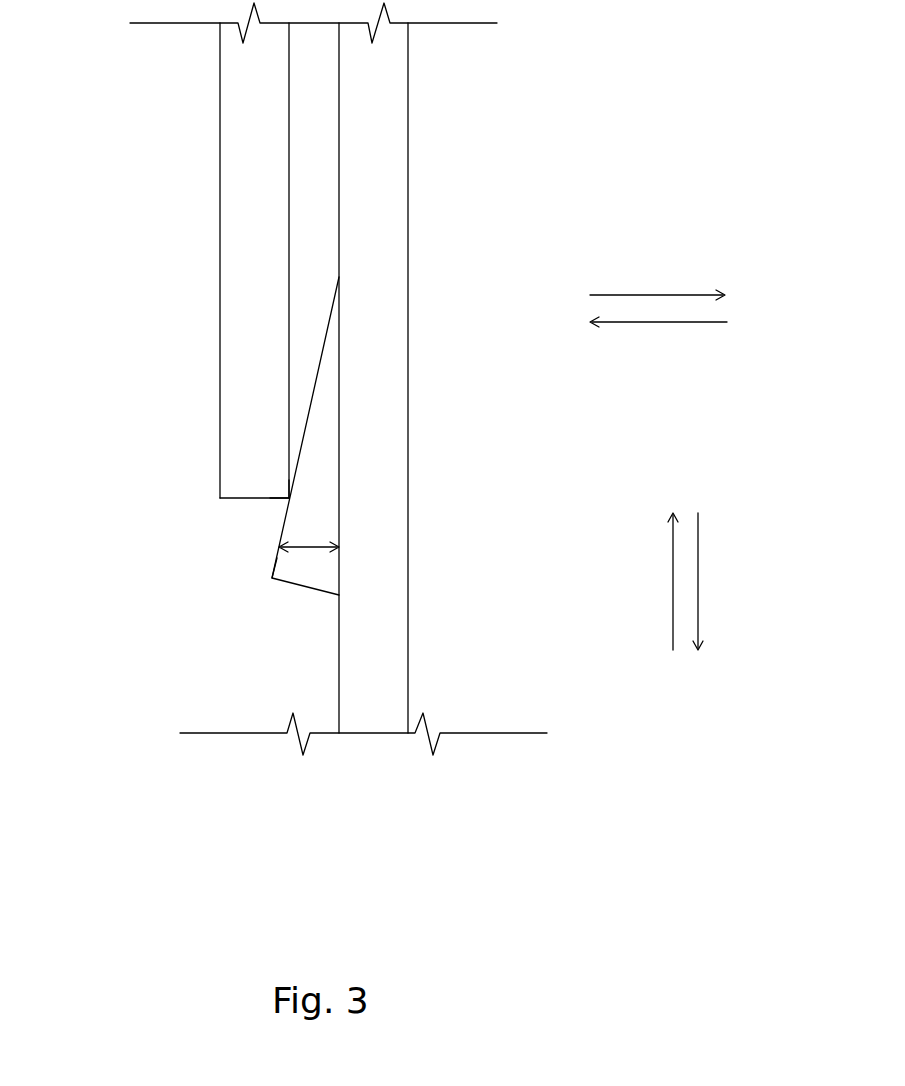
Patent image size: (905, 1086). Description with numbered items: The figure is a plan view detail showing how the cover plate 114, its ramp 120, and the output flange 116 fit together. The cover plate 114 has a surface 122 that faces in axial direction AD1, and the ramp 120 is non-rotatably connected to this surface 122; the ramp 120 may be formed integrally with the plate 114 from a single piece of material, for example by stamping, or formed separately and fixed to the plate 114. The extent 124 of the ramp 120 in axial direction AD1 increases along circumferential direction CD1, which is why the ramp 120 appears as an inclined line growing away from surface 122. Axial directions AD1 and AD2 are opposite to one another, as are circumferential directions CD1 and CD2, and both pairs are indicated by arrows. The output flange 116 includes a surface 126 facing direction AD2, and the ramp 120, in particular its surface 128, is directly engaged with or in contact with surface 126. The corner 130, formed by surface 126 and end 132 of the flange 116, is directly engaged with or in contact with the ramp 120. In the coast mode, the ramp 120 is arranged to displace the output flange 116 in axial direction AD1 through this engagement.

The cover plate 114 is at (410, 260).
The output flange 116 is at (218, 173).
The ramp 120 is at (270, 572).
The surface 122 is at (339, 647).
The extent 124 is at (305, 545).
The surface 126 is at (289, 97).
The surface 128 is at (313, 390).
The corner 130 is at (288, 496).
The end 132 is at (253, 499).
The axial direction AD1 is at (656, 322).
The axial direction AD2 is at (633, 295).
The circumferential direction CD1 is at (698, 555).
The circumferential direction CD2 is at (673, 580).